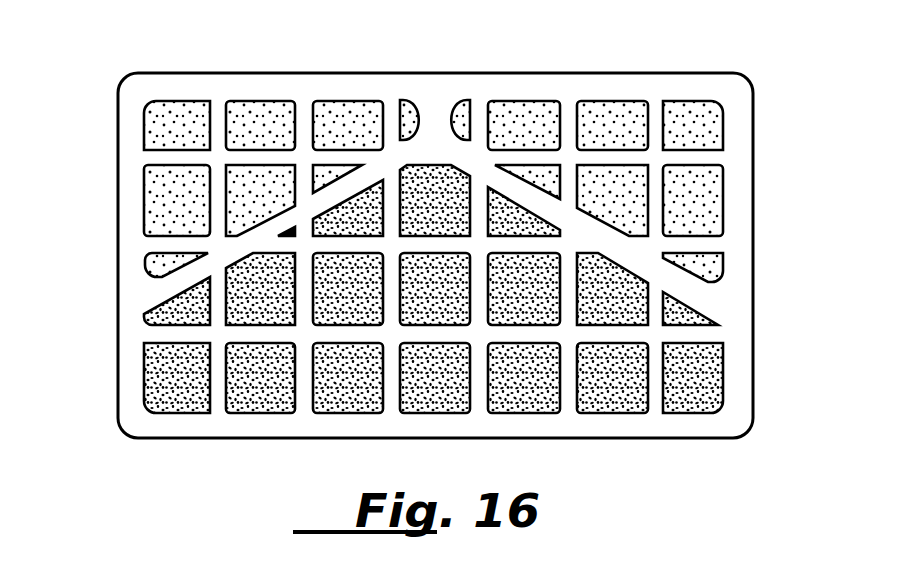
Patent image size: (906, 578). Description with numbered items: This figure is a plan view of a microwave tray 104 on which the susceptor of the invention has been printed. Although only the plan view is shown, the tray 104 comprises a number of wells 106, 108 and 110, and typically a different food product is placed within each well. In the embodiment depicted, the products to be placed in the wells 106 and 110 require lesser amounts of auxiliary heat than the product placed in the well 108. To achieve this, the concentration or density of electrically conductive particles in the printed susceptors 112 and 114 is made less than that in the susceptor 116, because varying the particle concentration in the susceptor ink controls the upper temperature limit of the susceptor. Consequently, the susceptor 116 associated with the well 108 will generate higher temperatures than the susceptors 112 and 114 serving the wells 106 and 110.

The microwave tray 104 is at (433, 87).
The well 106 is at (720, 143).
The well 108 is at (722, 375).
The well 110 is at (145, 202).
The printed susceptor 112 is at (272, 95).
The printed susceptor 114 is at (603, 118).
The susceptor 116 is at (635, 408).